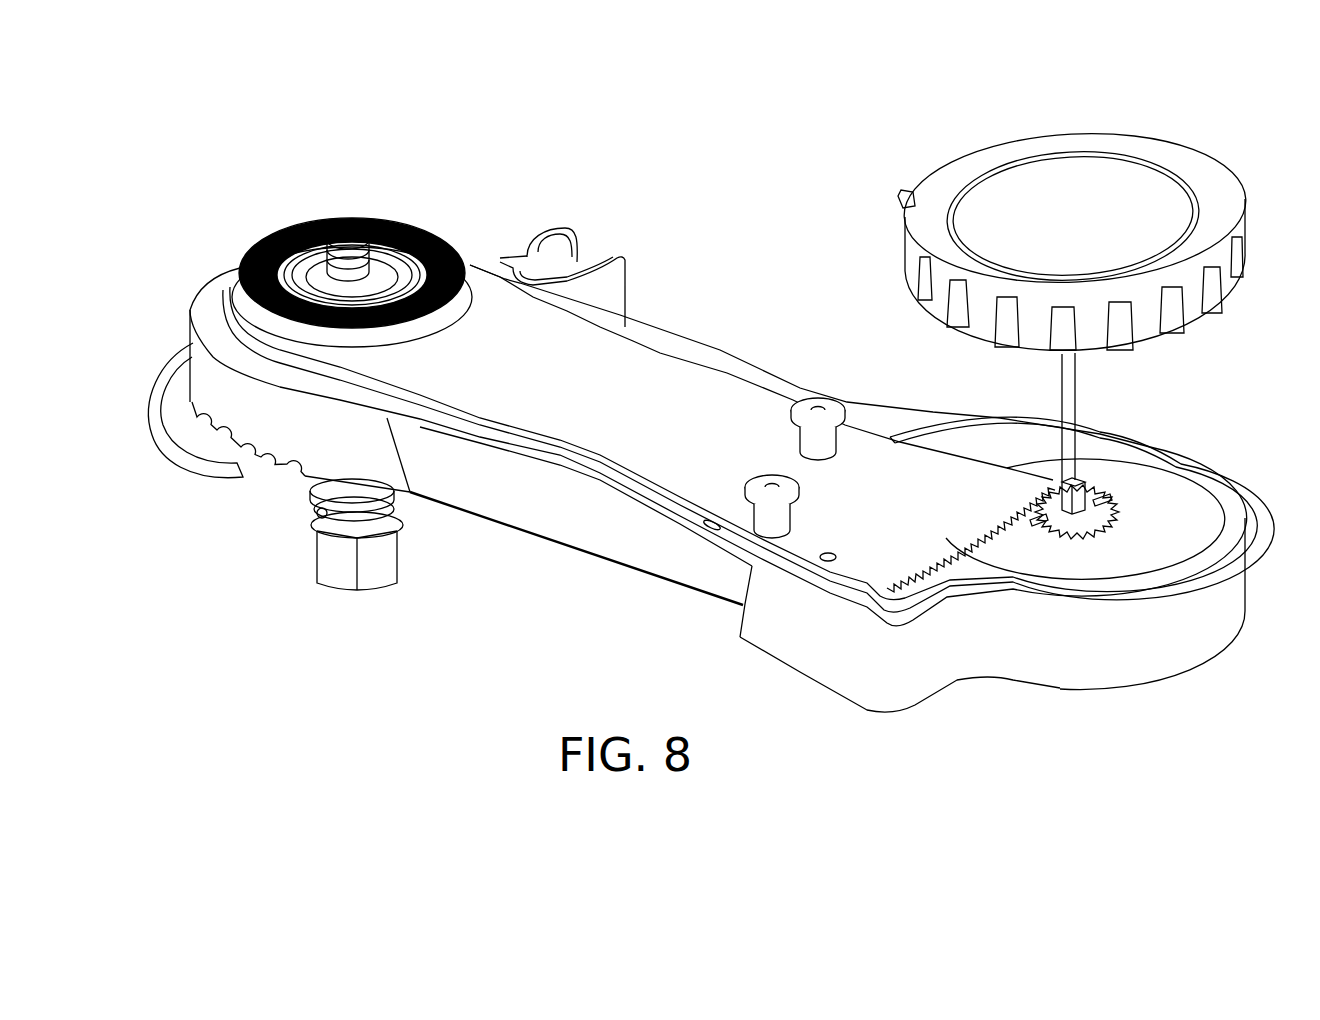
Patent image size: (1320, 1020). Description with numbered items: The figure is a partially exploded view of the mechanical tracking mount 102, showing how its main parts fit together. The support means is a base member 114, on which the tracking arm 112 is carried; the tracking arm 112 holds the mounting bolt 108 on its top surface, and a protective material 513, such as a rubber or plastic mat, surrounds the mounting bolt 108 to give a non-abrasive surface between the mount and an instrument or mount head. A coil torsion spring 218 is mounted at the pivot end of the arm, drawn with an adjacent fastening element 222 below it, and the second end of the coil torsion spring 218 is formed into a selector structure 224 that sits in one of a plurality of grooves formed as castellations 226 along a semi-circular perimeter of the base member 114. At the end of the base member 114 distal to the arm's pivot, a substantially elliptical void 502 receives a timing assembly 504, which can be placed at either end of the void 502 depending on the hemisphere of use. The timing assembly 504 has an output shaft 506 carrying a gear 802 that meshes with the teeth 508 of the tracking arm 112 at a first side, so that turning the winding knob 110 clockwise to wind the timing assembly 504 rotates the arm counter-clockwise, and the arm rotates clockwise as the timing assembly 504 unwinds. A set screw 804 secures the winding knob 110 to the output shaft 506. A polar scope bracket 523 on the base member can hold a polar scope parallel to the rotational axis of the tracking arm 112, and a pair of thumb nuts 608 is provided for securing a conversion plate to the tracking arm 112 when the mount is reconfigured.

The mechanical tracking mount 102 is at (704, 158).
The mounting bolt 108 is at (379, 249).
The winding knob 110 is at (1185, 178).
The tracking arm 112 is at (615, 355).
The base member 114 is at (573, 540).
The coil torsion spring 218 is at (316, 517).
The hex nut 222 is at (337, 572).
The selector structure 224 is at (170, 440).
The castellations 226 is at (275, 483).
The void 502 is at (1004, 433).
The timing assembly 504 is at (1198, 512).
The output shaft 506 is at (1082, 497).
The teeth 508 is at (905, 596).
The protective material 513 is at (453, 257).
The polar scope bracket 523 is at (620, 252).
The thumb nuts 608 is at (838, 405).
The gear 802 is at (1112, 515).
The set screw 804 is at (898, 198).